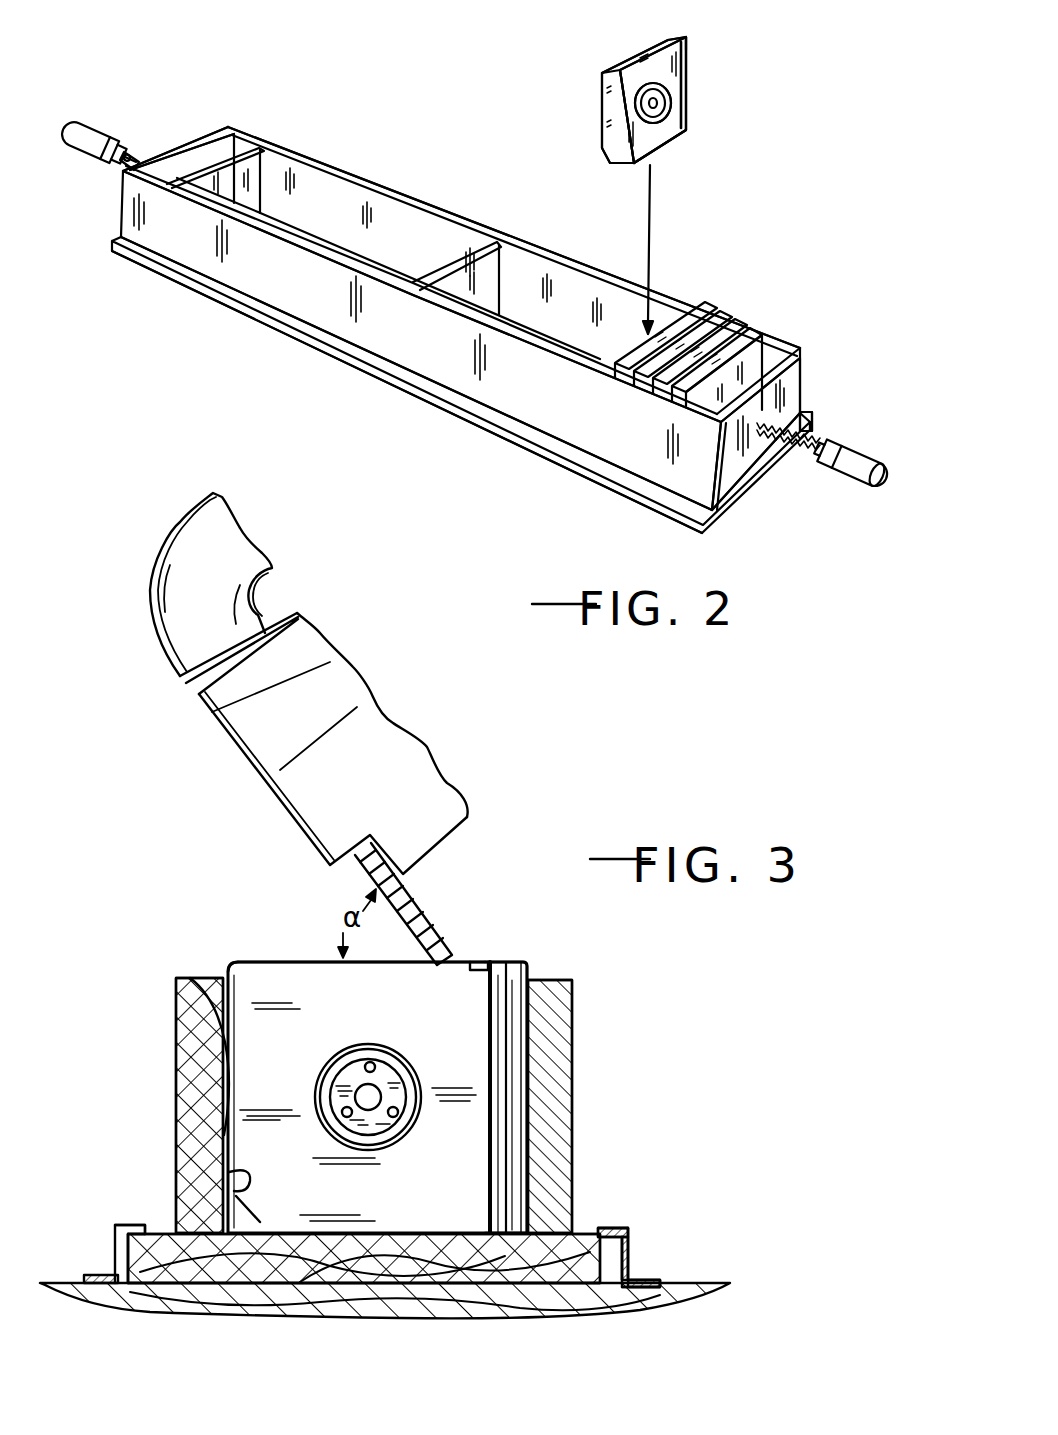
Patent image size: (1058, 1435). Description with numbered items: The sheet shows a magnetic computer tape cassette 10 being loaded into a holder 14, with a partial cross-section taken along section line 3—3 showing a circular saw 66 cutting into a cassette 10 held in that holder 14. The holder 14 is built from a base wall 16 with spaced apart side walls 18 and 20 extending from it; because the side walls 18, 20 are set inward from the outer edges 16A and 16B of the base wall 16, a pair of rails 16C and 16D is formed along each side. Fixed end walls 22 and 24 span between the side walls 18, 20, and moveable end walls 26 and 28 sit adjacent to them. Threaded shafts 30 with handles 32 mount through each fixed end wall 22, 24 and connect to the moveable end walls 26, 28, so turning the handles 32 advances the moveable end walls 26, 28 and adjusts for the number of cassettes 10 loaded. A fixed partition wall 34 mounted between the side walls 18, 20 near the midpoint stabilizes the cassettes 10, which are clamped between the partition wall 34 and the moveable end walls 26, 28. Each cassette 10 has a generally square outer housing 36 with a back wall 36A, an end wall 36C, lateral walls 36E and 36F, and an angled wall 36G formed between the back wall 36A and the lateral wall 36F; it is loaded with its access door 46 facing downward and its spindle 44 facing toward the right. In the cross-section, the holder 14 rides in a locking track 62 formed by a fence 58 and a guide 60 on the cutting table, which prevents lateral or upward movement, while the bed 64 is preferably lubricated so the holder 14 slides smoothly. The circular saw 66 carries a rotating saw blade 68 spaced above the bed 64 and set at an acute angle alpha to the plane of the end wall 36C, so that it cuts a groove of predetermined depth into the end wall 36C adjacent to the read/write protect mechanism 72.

In FIG. 2, the section line 3— 3 is at (766, 289).
In FIG. 2, the magnetic computer tape cassette 10 is at (700, 62).
In FIG. 2, the holder 14 is at (280, 282).
In FIG. 3, the holder 14 is at (580, 1020).
In FIG. 2, the base wall 16 is at (323, 240).
In FIG. 3, the base wall 16 is at (400, 1240).
In FIG. 2, the outer edge of base wall 16A is at (527, 453).
In FIG. 3, the outer edge of base wall 16A is at (140, 1256).
In FIG. 2, the outer edge of base wall 16B is at (806, 412).
In FIG. 3, the outer edge of base wall 16B is at (626, 1230).
In FIG. 2, the rail 16C is at (447, 393).
In FIG. 3, the rail 16C is at (160, 1230).
In FIG. 2, the rail 16D is at (803, 410).
In FIG. 3, the rail 16D is at (583, 1233).
In FIG. 2, the side wall 18 is at (387, 338).
In FIG. 3, the side wall 18 is at (178, 1027).
In FIG. 2, the side wall 20 is at (400, 222).
In FIG. 3, the side wall 20 is at (552, 1062).
In FIG. 2, the fixed end wall 22 is at (737, 466).
In FIG. 2, the fixed end wall 24 is at (195, 133).
In FIG. 2, the moveable end wall 26 is at (747, 362).
In FIG. 2, the moveable end wall 28 is at (261, 152).
In FIG. 2, the threaded shaft 30 is at (131, 158).
In FIG. 2, the handle 32 is at (94, 128).
In FIG. 2, the fixed partition wall 34 is at (500, 243).
In FIG. 2, the outer housing 36 is at (633, 42).
In FIG. 3, the outer housing 36 is at (271, 981).
In FIG. 2, the back wall 36A is at (653, 138).
In FIG. 3, the back wall 36A is at (308, 976).
In FIG. 2, the end wall 36C is at (617, 63).
In FIG. 3, the end wall 36C is at (228, 962).
In FIG. 2, the lateral wall 36E is at (600, 113).
In FIG. 2, the lateral wall 36F is at (686, 37).
In FIG. 2, the angled wall 36G is at (683, 93).
In FIG. 3, the angled wall 36G is at (527, 962).
In FIG. 2, the spindle 44 is at (668, 110).
In FIG. 3, the spindle 44 is at (390, 1070).
In FIG. 2, the access door 46 is at (612, 160).
In FIG. 3, the access door 46 is at (240, 1228).
In FIG. 3, the fence 58 is at (122, 1220).
In FIG. 3, the guide 60 is at (630, 1260).
In FIG. 3, the locking track 62 is at (625, 1190).
In FIG. 3, the bed 64 is at (673, 1287).
In FIG. 3, the circular saw 66 is at (338, 698).
In FIG. 3, the saw blade 68 is at (408, 893).
In FIG. 3, the read/write protect mechanism 72 is at (473, 960).